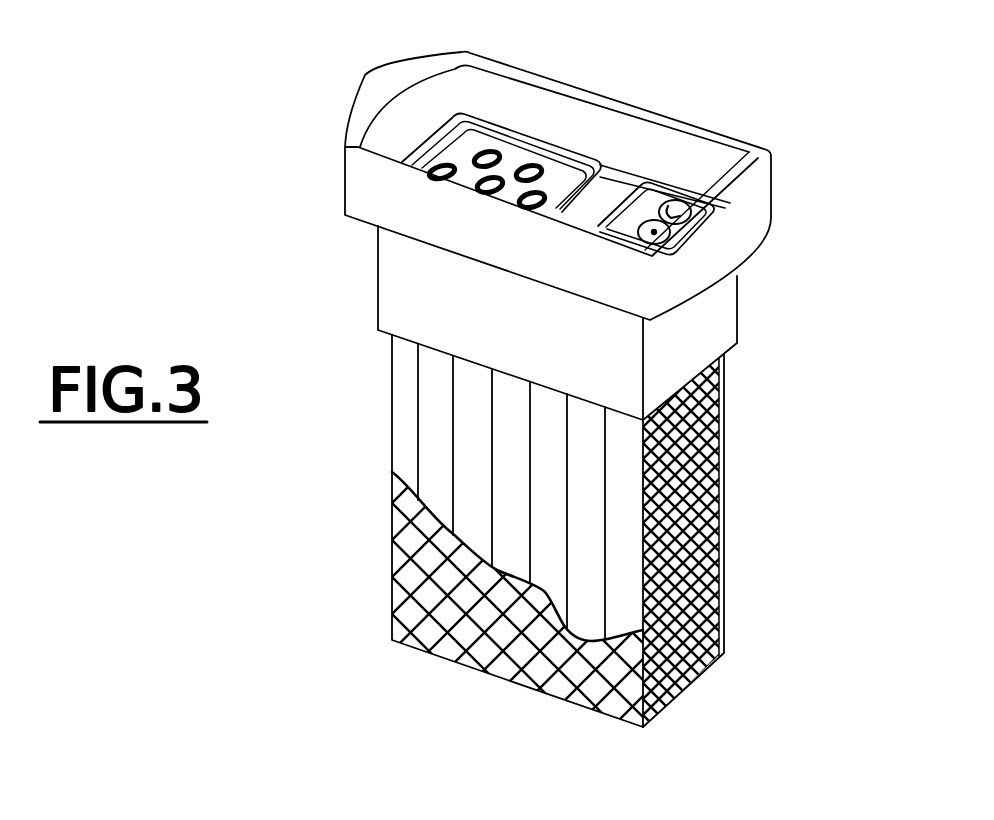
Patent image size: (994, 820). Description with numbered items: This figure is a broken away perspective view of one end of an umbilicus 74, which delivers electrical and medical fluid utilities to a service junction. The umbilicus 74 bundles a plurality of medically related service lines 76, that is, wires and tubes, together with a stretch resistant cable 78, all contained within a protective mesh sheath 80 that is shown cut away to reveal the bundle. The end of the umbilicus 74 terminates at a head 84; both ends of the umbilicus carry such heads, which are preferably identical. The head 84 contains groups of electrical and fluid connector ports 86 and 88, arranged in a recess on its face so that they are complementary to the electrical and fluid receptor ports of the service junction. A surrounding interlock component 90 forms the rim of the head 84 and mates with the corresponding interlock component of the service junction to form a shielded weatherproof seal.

The umbilicus 74 is at (667, 73).
The medically related service lines 76 is at (478, 437).
The stretch resistant cable 78 is at (607, 183).
The protective mesh sheath 80 is at (703, 557).
The head 84 is at (343, 182).
The electrical connector ports 86 is at (680, 207).
The fluid connector ports 88 is at (442, 140).
The interlock component 90 is at (575, 95).